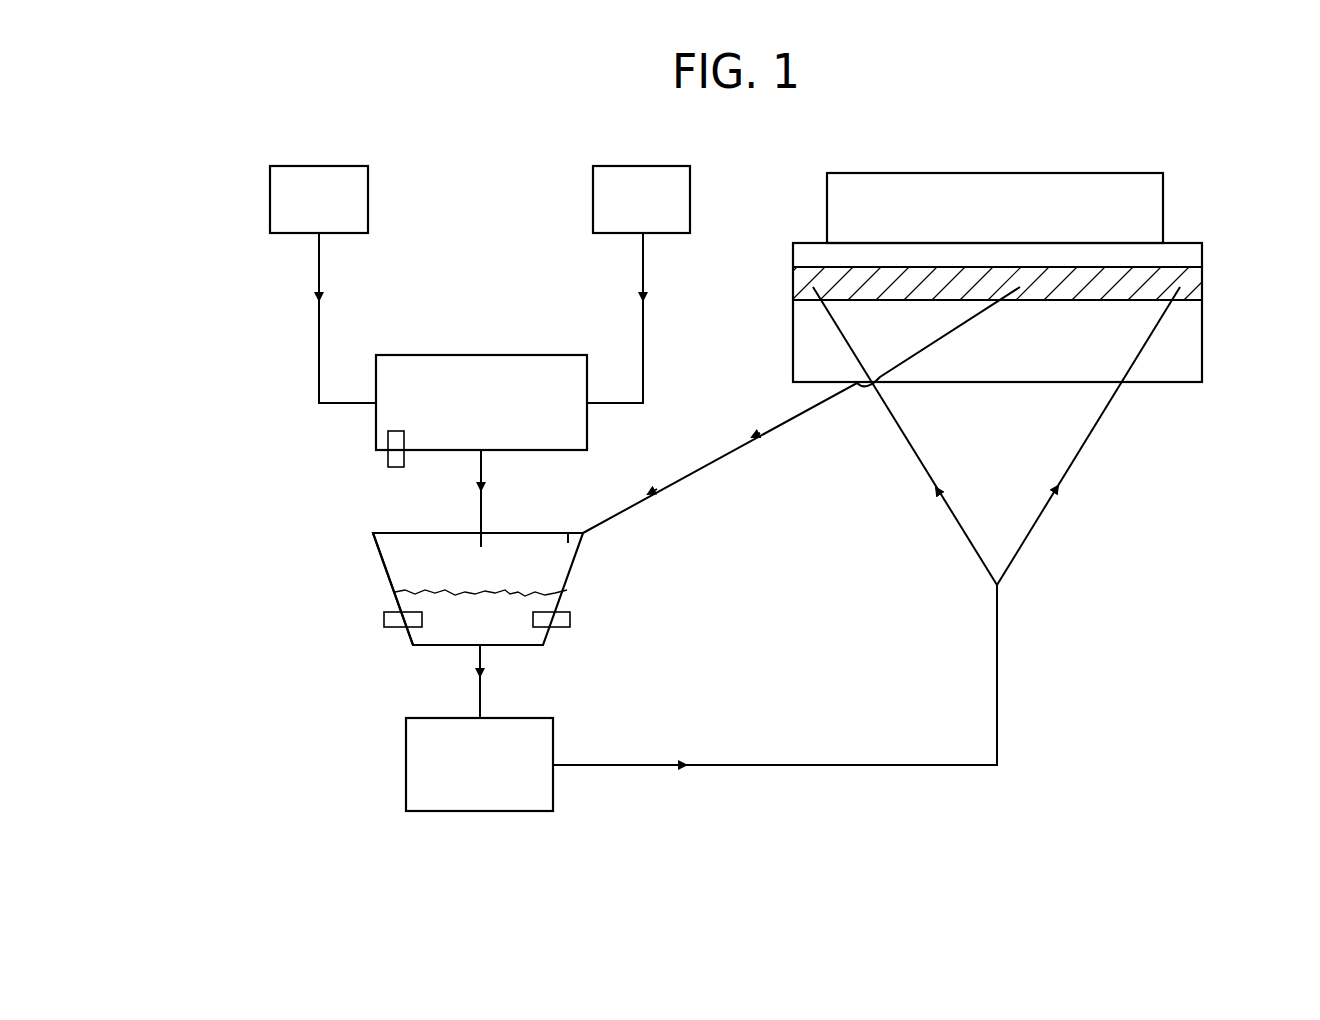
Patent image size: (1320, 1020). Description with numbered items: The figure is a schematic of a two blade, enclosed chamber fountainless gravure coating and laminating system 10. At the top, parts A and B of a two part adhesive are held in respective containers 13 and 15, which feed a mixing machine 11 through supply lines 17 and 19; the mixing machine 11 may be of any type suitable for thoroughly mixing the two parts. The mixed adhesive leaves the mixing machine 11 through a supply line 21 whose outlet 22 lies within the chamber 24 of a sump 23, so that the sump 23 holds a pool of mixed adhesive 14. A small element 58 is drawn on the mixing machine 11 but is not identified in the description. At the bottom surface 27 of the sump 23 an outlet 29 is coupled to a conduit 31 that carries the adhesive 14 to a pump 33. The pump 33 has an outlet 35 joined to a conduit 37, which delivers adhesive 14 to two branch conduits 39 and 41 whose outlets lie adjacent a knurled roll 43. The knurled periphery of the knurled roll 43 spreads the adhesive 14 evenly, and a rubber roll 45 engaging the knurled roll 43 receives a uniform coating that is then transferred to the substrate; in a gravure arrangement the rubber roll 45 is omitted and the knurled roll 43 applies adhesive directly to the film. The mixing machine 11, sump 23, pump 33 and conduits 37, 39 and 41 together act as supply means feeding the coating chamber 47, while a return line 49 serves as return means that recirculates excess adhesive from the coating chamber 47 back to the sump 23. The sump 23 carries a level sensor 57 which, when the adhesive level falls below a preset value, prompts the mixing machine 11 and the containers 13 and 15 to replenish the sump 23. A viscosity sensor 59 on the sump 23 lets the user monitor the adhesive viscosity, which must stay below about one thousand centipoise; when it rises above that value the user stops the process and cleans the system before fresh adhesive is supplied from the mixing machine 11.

The two blade enclosed chamber coating and laminating system 10 is at (266, 546).
The mixing machine 11 is at (424, 355).
The container 13 is at (337, 166).
The mixed adhesive 14 is at (452, 626).
The container 15 is at (627, 166).
The supply line 17 is at (319, 275).
The supply line 19 is at (643, 268).
The supply line 21 is at (481, 475).
The outlet 22 is at (483, 545).
The sump 23 is at (567, 583).
The chamber 24 is at (388, 545).
The bottom surface 27 is at (513, 647).
The outlet 29 is at (470, 655).
The conduit 31 is at (480, 697).
The pump 33 is at (472, 811).
The outlet 35 is at (553, 770).
The conduit 37 is at (660, 770).
The branch conduit 39 is at (942, 507).
The branch conduit 41 is at (1085, 448).
The knurled roll 43 is at (1195, 290).
The rubber roll 45 is at (1115, 185).
The coating chamber 47 is at (1162, 353).
The return line 49 is at (705, 462).
The level sensor 57 is at (567, 617).
The sensor 58 is at (388, 460).
The viscosity sensor 59 is at (388, 617).